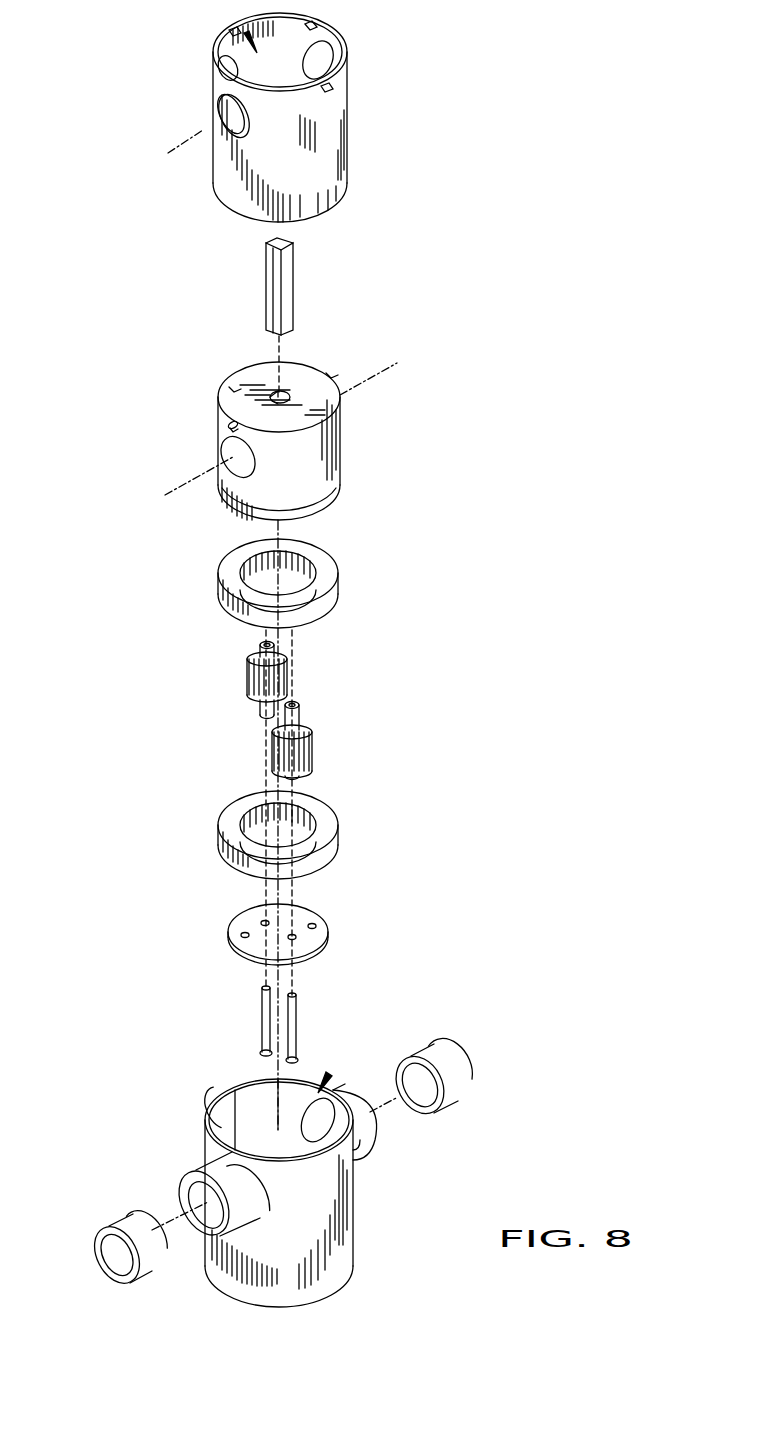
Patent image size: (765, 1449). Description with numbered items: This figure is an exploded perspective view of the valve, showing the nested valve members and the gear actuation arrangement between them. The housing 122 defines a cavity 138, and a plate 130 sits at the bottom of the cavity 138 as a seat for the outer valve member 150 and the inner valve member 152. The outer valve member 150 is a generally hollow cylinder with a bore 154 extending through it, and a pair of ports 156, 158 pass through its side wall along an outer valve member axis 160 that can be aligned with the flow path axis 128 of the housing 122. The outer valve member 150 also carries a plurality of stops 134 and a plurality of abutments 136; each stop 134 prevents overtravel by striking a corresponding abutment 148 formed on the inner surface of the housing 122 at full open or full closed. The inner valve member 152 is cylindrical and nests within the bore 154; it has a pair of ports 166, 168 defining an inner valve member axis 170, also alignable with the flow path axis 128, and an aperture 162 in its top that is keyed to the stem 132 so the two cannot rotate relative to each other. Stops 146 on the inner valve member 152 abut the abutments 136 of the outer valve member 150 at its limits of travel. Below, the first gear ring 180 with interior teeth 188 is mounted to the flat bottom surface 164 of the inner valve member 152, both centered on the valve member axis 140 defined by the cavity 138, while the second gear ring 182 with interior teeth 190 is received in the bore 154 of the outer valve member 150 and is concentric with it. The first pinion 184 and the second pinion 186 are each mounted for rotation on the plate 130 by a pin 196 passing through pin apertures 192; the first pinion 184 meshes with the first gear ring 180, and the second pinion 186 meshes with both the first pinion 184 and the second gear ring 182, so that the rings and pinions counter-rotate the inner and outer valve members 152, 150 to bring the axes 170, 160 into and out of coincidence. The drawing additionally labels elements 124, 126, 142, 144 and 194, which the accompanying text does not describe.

The housing 122 is at (355, 1225).
The right boss 124 is at (360, 1165).
The left boss 126 is at (212, 1168).
The flow path axis 128 is at (160, 1225).
The plate 130 is at (328, 918).
The stem 132 is at (293, 275).
The stops 134 is at (232, 34).
The abutments 136 is at (225, 60).
The cavity 138 is at (330, 1074).
The valve member axis 140 is at (275, 1098).
The end cap 142 is at (418, 1050).
The end cap 144 is at (112, 1225).
The stops 146 is at (330, 373).
The abutments 148 is at (318, 1100).
The outer valve member 150 is at (347, 170).
The inner valve member 152 is at (340, 465).
The bore 154 is at (245, 38).
The port 156 is at (230, 112).
The port 158 is at (308, 27).
The outer valve member axis 160 is at (192, 140).
The aperture 162 is at (286, 392).
The flat bottom surface 164 is at (325, 505).
The port 166 is at (230, 422).
The port 168 is at (348, 410).
The inner valve member axis 170 is at (180, 488).
The first gear ring 180 is at (330, 598).
The second gear ring 182 is at (328, 855).
The first pinion 184 is at (245, 672).
The second pinion 186 is at (312, 752).
The interior teeth 188 is at (295, 587).
The interior teeth 190 is at (307, 812).
The pin apertures 192 is at (264, 920).
The plate hole 194 is at (295, 938).
The pin 196 is at (260, 998).